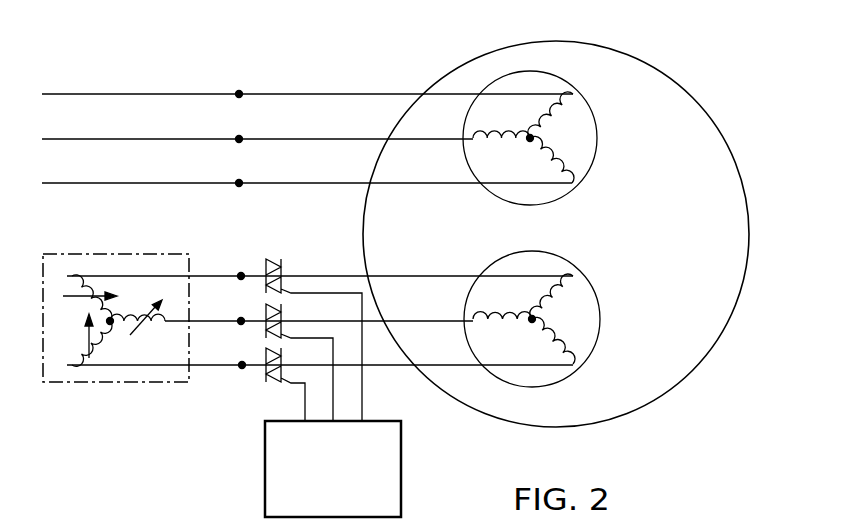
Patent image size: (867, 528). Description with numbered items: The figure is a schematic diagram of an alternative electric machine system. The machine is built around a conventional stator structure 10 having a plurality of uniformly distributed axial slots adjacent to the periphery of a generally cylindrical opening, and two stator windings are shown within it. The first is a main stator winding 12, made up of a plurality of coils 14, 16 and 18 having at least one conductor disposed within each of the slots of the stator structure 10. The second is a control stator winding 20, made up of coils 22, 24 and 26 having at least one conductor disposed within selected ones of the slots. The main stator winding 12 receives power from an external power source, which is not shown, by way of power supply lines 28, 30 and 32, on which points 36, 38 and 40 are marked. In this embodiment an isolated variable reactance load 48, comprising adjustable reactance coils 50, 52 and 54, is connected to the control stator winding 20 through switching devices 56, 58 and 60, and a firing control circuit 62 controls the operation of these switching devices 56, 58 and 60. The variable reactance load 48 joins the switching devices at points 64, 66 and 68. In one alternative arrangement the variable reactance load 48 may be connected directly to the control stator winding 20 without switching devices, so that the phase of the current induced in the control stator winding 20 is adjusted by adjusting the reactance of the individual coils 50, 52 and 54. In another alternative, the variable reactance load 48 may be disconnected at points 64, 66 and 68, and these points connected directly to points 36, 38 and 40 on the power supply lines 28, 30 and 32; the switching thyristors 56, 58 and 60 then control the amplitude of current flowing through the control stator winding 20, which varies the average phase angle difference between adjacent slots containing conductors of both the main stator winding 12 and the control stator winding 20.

The stator structure 10 is at (688, 92).
The main stator winding 12 is at (598, 108).
The coil 14 is at (560, 111).
The coil 16 is at (503, 130).
The coil 18 is at (549, 160).
The control stator winding 20 is at (601, 318).
The coil 22 is at (556, 298).
The coil 24 is at (503, 311).
The coil 26 is at (549, 342).
The power supply line 28 is at (108, 94).
The power supply line 30 is at (111, 139).
The power supply line 32 is at (116, 183).
The point 36 is at (239, 93).
The point 38 is at (239, 138).
The point 40 is at (239, 182).
The variable reactance load 48 is at (88, 383).
The adjustable reactance coil 50 is at (149, 326).
The adjustable reactance coil 52 is at (92, 303).
The adjustable reactance coil 54 is at (96, 340).
The switching device 56 is at (281, 262).
The switching device 58 is at (282, 307).
The switching device 60 is at (282, 351).
The firing control circuit 62 is at (401, 466).
The point 64 is at (241, 275).
The point 66 is at (241, 320).
The point 68 is at (242, 364).